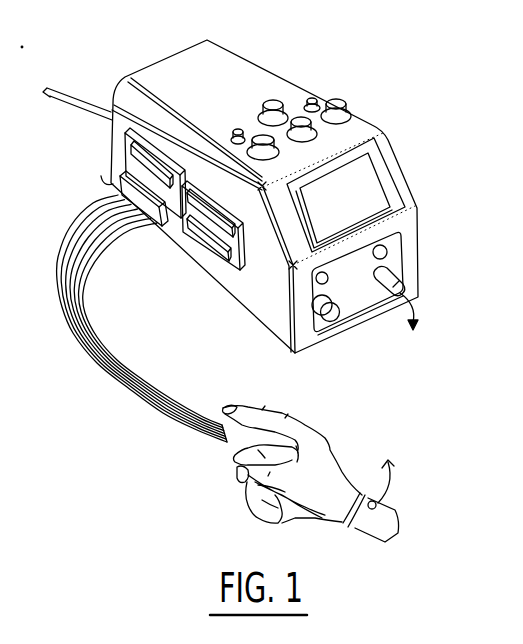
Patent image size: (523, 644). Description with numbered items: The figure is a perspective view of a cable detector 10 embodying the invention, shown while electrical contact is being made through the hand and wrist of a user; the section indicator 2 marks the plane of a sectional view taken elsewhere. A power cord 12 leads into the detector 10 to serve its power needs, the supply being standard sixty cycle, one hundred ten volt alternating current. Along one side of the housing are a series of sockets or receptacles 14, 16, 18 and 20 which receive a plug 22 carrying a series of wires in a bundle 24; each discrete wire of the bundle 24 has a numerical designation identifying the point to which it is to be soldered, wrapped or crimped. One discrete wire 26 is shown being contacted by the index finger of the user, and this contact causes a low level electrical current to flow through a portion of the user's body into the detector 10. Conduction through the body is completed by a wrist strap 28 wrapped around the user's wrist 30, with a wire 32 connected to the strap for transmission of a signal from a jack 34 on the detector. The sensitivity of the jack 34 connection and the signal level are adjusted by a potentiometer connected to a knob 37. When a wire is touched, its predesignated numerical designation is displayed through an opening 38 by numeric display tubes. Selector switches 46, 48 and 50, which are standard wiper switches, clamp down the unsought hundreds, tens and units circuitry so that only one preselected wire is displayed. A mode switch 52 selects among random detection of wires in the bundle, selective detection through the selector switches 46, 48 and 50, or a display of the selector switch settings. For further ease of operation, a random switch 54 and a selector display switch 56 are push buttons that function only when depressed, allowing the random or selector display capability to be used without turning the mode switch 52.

The cable detector 10 is at (280, 44).
The section line indicator 2 is at (100, 87).
The power cord 12 is at (68, 108).
The socket or receptacle 14 is at (153, 174).
The socket or receptacle 16 is at (112, 182).
The socket or receptacle 18 is at (228, 245).
The socket or receptacle 20 is at (213, 260).
The plug 22 is at (165, 233).
The wire bundle 24 is at (93, 367).
The discrete wire 26 is at (235, 432).
The wrist strap 28 is at (356, 533).
The user's wrist 30 is at (343, 523).
The wire 32 is at (386, 490).
The jack 34 is at (377, 278).
The knob 37 is at (330, 318).
The opening 38 is at (292, 265).
The selector switch 46 is at (261, 186).
The selector switch 48 is at (372, 126).
The selector switch 50 is at (345, 102).
The mode switch 52 is at (272, 100).
The random switch 54 is at (233, 134).
The selector display switch 56 is at (315, 98).